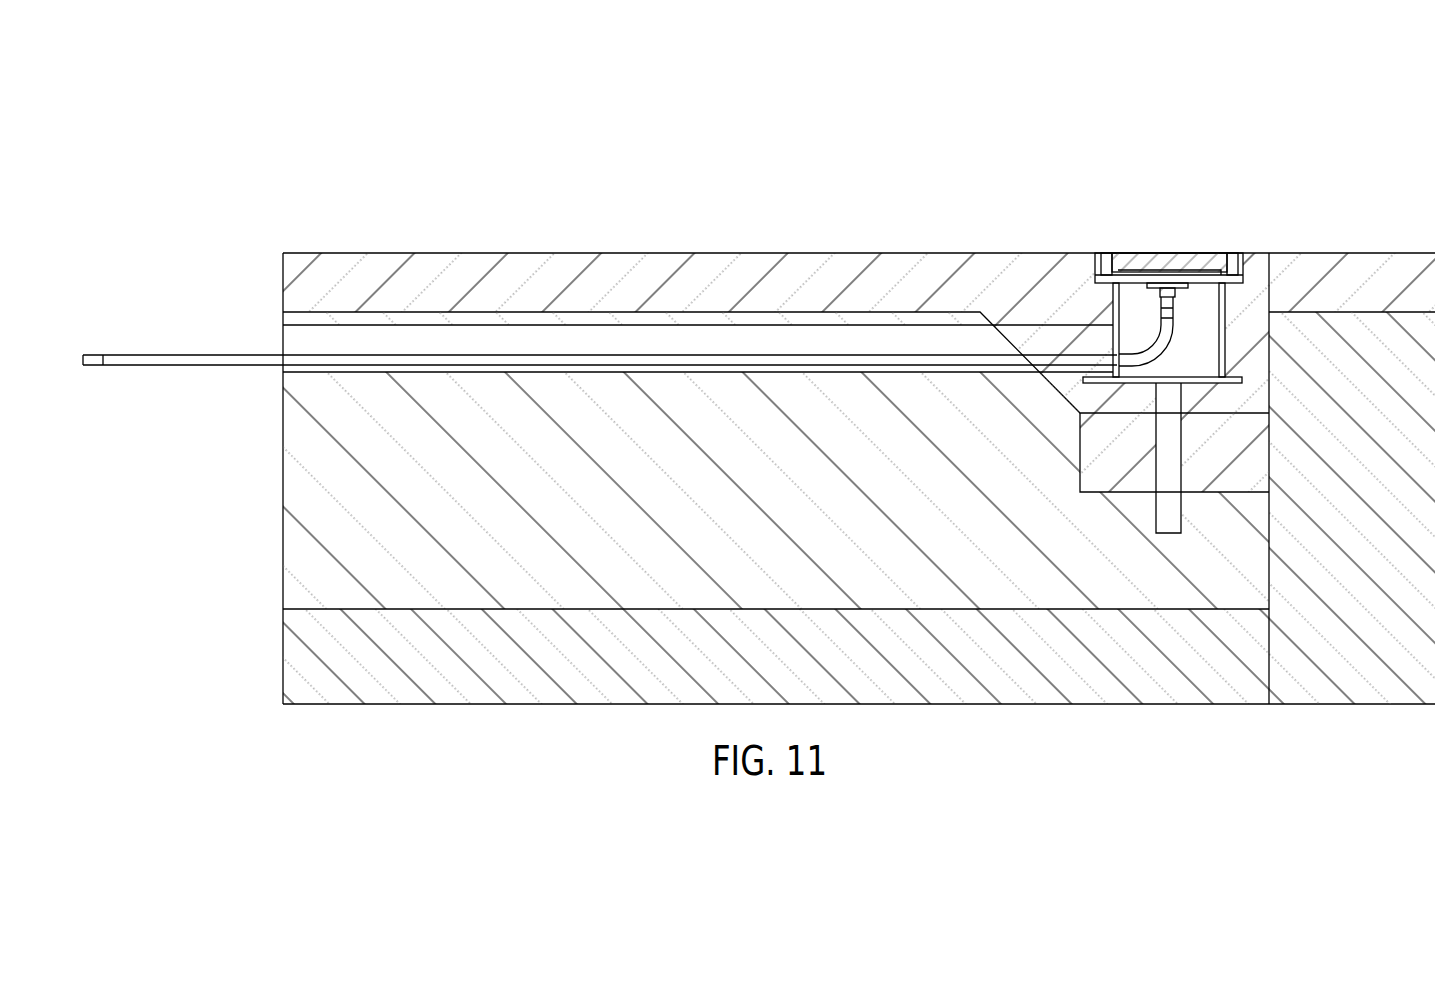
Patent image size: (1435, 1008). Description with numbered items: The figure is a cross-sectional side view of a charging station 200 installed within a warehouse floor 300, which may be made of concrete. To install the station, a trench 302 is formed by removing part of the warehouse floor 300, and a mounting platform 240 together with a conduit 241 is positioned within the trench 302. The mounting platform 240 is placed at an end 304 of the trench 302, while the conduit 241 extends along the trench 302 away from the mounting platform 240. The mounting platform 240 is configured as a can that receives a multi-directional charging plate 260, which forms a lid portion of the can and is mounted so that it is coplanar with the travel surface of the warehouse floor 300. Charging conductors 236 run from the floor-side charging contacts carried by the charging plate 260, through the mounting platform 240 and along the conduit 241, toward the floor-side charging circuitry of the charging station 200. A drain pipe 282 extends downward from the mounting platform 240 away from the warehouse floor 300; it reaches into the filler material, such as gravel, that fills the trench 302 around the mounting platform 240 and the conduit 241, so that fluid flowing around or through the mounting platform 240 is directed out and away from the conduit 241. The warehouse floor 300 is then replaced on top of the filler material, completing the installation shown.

The charging station 200 is at (759, 374).
The warehouse floor 300 is at (427, 253).
The conduit 241 is at (638, 323).
The charging conductors 236 is at (497, 355).
The trench 302 is at (312, 497).
The end of the trench 304 is at (1262, 338).
The drain pipe 282 is at (1183, 454).
The mounting platform 240 is at (1113, 311).
The multi-directional charging plate 260 is at (1157, 253).